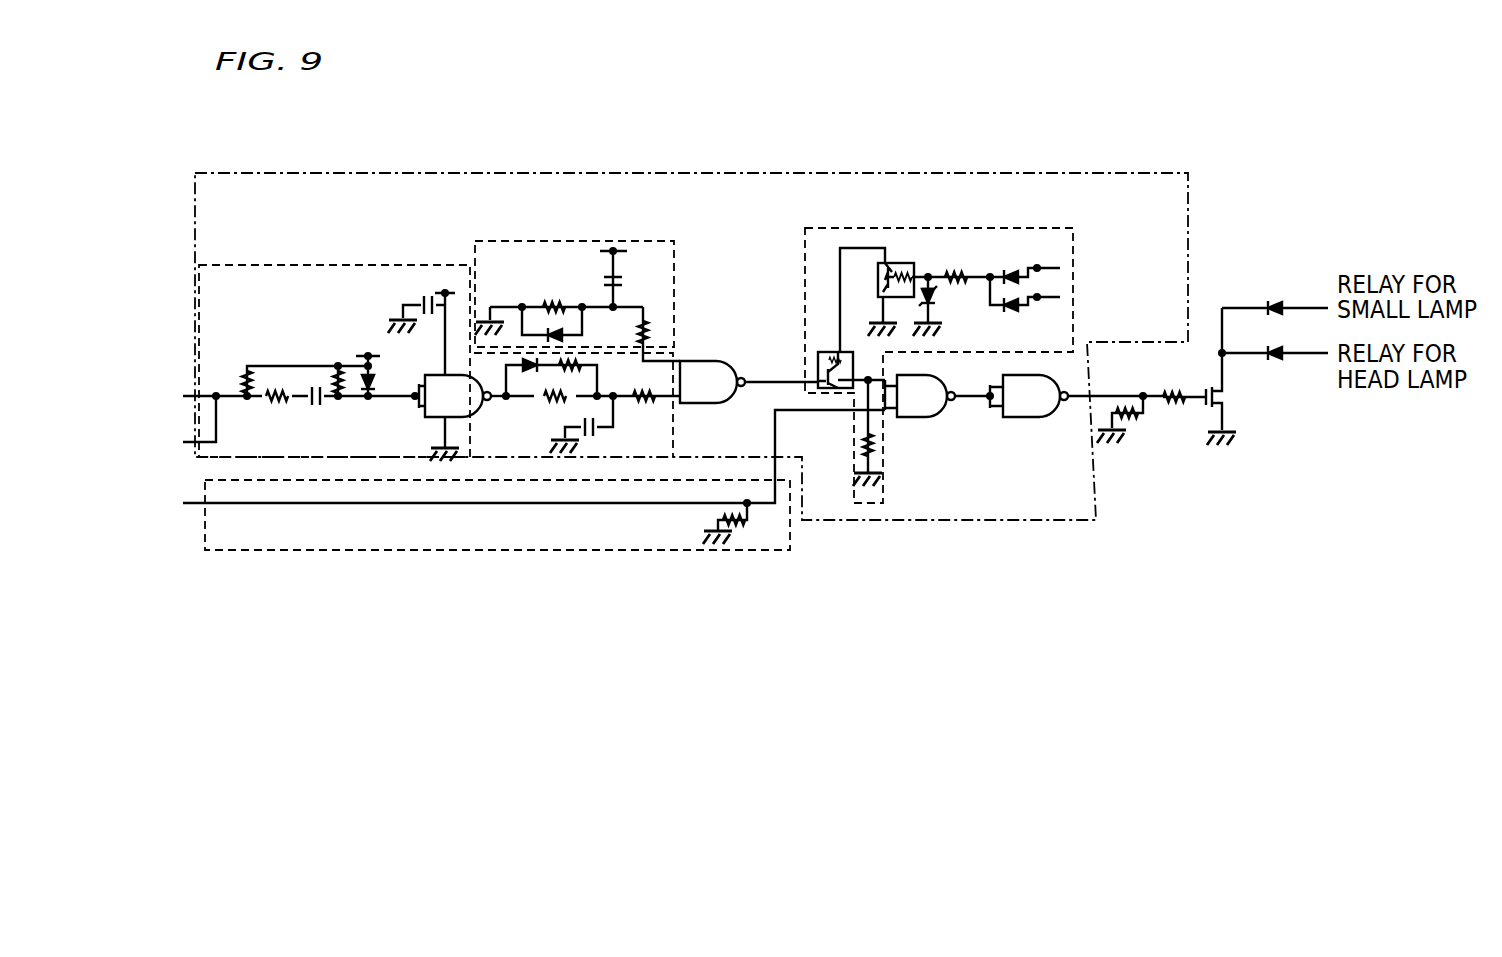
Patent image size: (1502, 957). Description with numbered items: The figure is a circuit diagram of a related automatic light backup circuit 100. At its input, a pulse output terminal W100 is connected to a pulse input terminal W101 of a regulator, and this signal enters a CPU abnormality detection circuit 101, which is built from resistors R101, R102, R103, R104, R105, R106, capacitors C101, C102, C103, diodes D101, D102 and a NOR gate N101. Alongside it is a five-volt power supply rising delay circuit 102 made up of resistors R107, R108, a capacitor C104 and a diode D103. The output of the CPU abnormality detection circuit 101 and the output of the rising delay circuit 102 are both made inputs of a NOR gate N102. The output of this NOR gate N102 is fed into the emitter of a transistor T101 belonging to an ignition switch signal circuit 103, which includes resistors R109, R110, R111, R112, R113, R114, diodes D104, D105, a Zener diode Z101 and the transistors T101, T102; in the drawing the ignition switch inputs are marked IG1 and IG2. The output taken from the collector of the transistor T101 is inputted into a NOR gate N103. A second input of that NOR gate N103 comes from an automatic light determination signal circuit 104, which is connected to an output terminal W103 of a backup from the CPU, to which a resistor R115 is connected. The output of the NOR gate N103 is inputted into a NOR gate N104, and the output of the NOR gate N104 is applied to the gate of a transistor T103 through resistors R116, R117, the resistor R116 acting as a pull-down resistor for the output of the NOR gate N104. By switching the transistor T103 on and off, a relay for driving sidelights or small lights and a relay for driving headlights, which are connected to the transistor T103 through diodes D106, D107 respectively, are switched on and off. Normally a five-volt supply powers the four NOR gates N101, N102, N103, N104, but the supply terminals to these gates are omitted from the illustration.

The automatic light backup circuit 100 is at (995, 173).
The CPU abnormality detection circuit 101 is at (295, 264).
The 5V power supply rising delay circuit 102 is at (553, 238).
The ignition switch (IGSW) signal circuit 103 is at (1075, 283).
The automatic light determination signal circuit 104 is at (503, 553).
The resistor R101 is at (245, 374).
The resistor R102 is at (270, 402).
The resistor R103 is at (337, 364).
The resistor R104 is at (549, 401).
The resistor R105 is at (582, 367).
The resistor R106 is at (640, 402).
The resistor R107 is at (556, 305).
The resistor R108 is at (650, 330).
The resistor R109 is at (876, 447).
The resistor R110 is at (803, 367).
The resistor R111 is at (803, 318).
The resistor R112 is at (906, 275).
The resistor R113 is at (905, 300).
The resistor R114 is at (958, 272).
The resistor R115 is at (736, 550).
The resistor R116 is at (1128, 420).
The resistor R117 is at (1174, 405).
The capacitor C101 is at (316, 406).
The capacitor C102 is at (418, 300).
The capacitor C103 is at (600, 438).
The capacitor C104 is at (622, 288).
The diode D101 is at (374, 382).
The diode D102 is at (525, 372).
The diode D103 is at (566, 332).
The diode D104 is at (1013, 270).
The diode D105 is at (1012, 310).
The diode D106 is at (1276, 300).
The diode D107 is at (1276, 362).
The NOR gate N101 is at (433, 416).
The NOR gate N102 is at (712, 404).
The NOR gate N103 is at (935, 418).
The NOR gate N104 is at (1040, 418).
The transistor T101 is at (856, 364).
The transistor T102 is at (888, 268).
The transistor T103 is at (1206, 393).
The Zener diode Z101 is at (933, 297).
The pulse output terminal W100 is at (151, 445).
The pulse input terminal W101 is at (151, 397).
The output terminal W103 is at (505, 464).
The ignition switch signal 1 IG1 is at (1059, 258).
The ignition switch signal 2 IG2 is at (1059, 286).